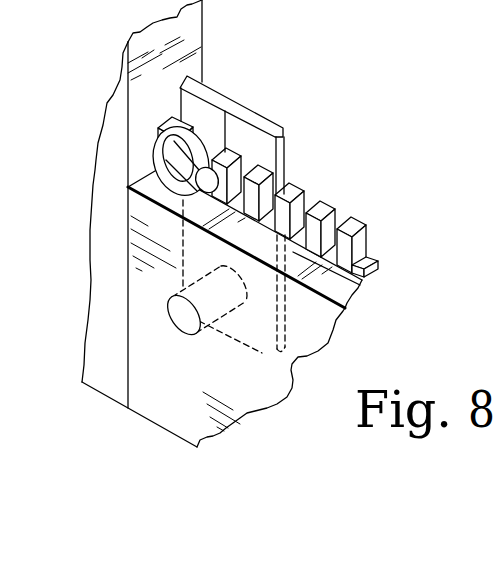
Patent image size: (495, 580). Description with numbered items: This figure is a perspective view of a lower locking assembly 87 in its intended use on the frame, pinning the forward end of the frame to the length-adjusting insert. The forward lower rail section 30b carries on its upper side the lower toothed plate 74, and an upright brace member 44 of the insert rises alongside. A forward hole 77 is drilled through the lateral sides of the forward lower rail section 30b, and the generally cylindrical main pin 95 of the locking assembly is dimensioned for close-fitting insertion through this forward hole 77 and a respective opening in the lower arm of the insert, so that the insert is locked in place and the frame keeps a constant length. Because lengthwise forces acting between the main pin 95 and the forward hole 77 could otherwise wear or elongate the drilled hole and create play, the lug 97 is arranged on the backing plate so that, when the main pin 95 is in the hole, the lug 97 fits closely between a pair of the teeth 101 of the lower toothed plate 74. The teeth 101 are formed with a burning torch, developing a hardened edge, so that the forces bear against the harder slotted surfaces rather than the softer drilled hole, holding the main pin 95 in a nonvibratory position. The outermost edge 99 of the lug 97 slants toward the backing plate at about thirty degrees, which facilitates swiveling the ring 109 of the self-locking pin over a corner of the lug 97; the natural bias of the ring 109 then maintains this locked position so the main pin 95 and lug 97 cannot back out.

The forward lower rail section 30b is at (153, 427).
The upright brace member 44 is at (188, 37).
The lower toothed plate 74 is at (362, 278).
The lower locking assembly 87 is at (300, 157).
The lug 97 is at (222, 113).
The teeth 101 is at (172, 118).
The ring 109 is at (157, 160).
The outermost edge 99 is at (178, 194).
The forward hole 77 is at (190, 325).
The main pin 95 is at (180, 318).